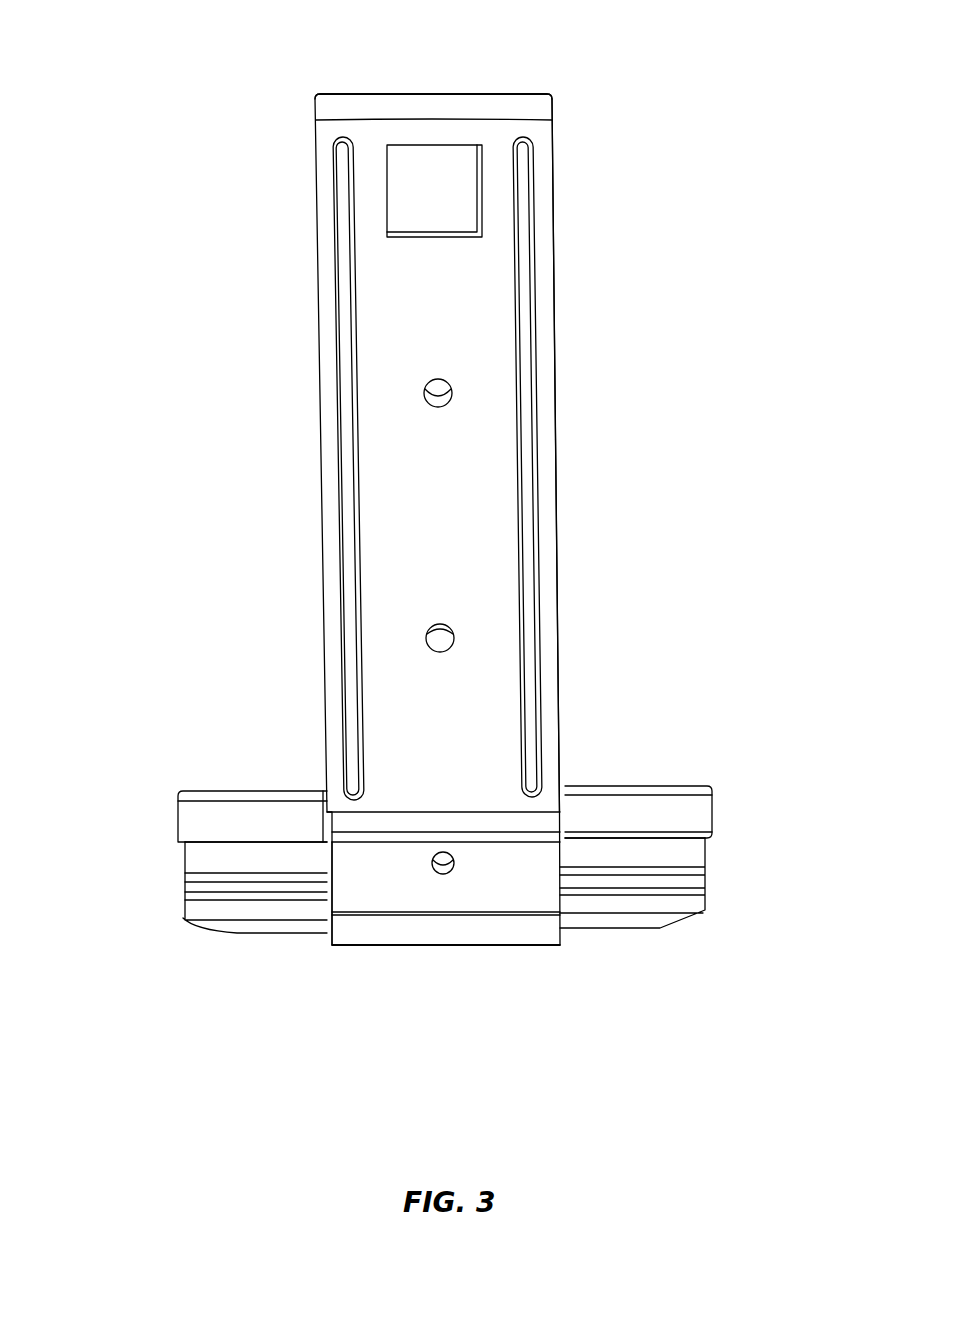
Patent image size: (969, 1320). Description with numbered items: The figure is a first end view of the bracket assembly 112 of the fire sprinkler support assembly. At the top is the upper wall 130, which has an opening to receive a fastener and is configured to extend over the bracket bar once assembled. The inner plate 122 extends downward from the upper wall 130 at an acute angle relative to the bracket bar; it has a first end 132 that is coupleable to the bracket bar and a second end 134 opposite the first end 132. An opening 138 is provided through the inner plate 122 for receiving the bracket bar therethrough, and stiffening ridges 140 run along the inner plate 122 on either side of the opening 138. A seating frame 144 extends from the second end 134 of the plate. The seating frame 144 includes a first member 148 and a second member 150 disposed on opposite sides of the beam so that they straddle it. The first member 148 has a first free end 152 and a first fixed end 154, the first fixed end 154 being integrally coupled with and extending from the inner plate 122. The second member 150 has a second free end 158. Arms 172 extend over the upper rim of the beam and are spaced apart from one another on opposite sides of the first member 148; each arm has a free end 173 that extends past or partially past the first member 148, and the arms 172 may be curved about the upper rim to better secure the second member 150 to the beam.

The bracket assembly 112 is at (93, 82).
The inner plate 122 is at (488, 565).
The upper wall 130 is at (455, 100).
The first end 132 is at (578, 108).
The second end 134 is at (586, 750).
The opening 138 is at (404, 177).
The stiffening ridges 140 is at (527, 438).
The seating frame 144 is at (118, 872).
The first member 148 is at (365, 940).
The second member 150 is at (212, 915).
The first free end 152 is at (472, 928).
The first fixed end 154 is at (370, 820).
The second free end 158 is at (620, 910).
The arms 172 is at (187, 820).
The free end 173 is at (217, 842).